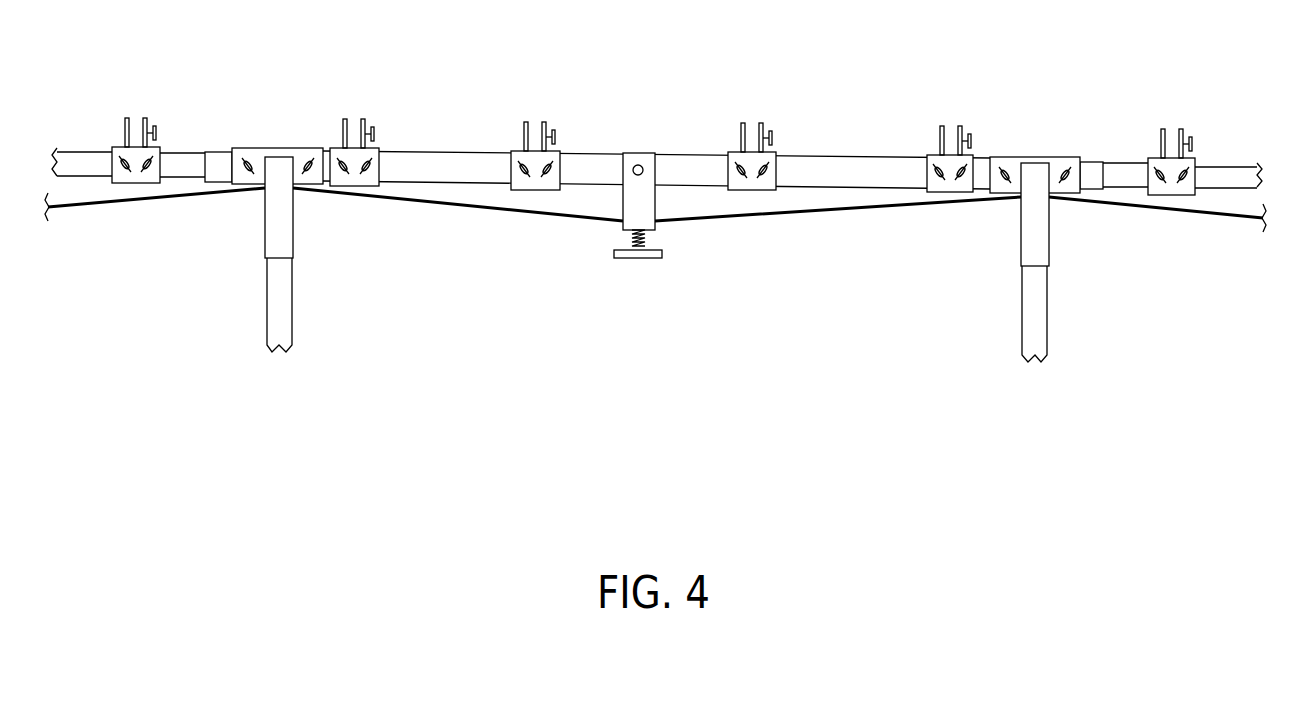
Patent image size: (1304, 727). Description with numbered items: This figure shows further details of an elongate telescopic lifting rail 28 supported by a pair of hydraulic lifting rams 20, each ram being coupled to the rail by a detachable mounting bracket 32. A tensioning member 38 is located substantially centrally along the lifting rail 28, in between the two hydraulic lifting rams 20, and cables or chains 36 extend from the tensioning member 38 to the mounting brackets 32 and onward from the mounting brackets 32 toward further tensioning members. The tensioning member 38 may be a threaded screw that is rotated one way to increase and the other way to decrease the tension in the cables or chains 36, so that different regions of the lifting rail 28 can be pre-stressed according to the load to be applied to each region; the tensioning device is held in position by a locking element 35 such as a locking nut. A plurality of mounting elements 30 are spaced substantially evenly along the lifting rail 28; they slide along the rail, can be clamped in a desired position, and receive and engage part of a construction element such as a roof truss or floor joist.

The hydraulic lifting ram 20 is at (267, 272).
The elongate lifting rail 28 is at (443, 157).
The mounting element 30 is at (758, 190).
The mounting bracket 32 is at (280, 148).
The locking element 35 is at (640, 165).
The cable or chain 36 is at (517, 212).
The tensioning member 38 is at (630, 258).